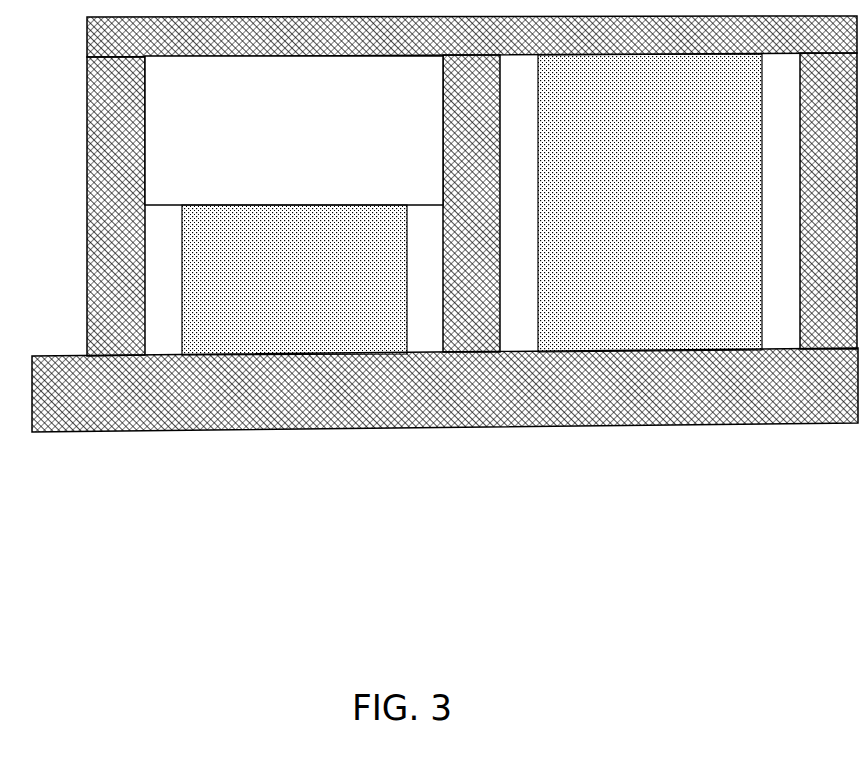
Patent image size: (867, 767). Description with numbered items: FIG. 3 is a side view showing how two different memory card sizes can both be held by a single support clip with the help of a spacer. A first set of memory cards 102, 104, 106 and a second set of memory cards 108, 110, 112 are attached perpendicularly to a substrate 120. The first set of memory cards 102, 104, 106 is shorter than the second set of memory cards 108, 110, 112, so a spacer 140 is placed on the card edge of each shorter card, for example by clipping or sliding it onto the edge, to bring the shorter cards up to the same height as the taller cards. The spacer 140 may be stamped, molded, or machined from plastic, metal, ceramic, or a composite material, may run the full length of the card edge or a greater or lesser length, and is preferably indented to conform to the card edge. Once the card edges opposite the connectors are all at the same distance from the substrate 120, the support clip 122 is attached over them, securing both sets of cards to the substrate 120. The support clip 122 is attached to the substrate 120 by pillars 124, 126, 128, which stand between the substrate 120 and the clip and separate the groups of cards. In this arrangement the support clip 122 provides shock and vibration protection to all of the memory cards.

The support clip 122 is at (472, 36).
The pillar 124 is at (116, 206).
The pillar 126 is at (471, 203).
The pillar 128 is at (828, 201).
The spacer 140 is at (294, 130).
The memory card 102 is at (294, 280).
The memory card 104 is at (294, 280).
The memory card 106 is at (294, 280).
The memory card 108 is at (650, 203).
The memory card 110 is at (650, 203).
The memory card 112 is at (650, 203).
The substrate 120 is at (445, 390).